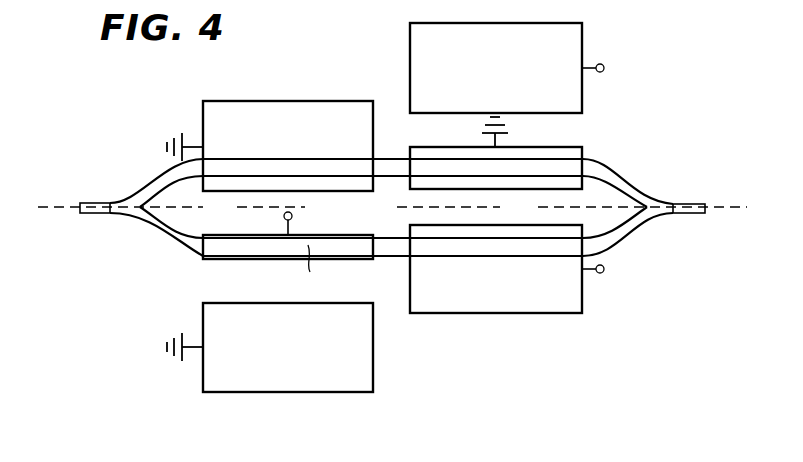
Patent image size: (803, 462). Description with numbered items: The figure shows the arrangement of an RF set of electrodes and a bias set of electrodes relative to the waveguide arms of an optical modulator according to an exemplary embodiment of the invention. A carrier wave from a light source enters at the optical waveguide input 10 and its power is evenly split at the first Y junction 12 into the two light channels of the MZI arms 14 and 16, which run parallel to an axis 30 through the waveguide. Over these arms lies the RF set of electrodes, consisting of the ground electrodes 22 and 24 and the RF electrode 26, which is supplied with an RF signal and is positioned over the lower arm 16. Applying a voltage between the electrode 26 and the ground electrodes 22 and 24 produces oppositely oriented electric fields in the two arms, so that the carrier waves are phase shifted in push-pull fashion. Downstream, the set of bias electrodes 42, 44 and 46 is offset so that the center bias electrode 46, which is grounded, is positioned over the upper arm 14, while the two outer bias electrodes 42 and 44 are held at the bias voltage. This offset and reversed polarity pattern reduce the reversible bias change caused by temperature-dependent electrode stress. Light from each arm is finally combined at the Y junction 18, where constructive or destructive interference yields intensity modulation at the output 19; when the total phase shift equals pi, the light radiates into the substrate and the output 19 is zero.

The optical waveguide input 10 is at (97, 203).
The first Y junction 12 is at (147, 189).
The MZI arm 14 is at (380, 158).
The MZI arm 16 is at (385, 258).
The Y junction 18 is at (635, 190).
The output 19 is at (680, 213).
The ground electrode 22 is at (235, 392).
The ground electrode 24 is at (257, 101).
The RF electrode 26 is at (240, 234).
The axis 30 is at (53, 209).
The bias electrode 42 is at (422, 313).
The bias electrode 44 is at (410, 37).
The center bias electrode 46 is at (490, 189).